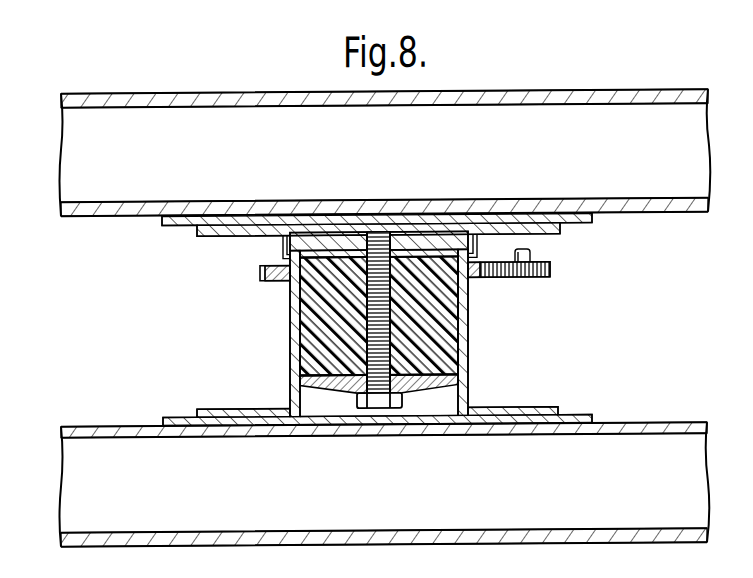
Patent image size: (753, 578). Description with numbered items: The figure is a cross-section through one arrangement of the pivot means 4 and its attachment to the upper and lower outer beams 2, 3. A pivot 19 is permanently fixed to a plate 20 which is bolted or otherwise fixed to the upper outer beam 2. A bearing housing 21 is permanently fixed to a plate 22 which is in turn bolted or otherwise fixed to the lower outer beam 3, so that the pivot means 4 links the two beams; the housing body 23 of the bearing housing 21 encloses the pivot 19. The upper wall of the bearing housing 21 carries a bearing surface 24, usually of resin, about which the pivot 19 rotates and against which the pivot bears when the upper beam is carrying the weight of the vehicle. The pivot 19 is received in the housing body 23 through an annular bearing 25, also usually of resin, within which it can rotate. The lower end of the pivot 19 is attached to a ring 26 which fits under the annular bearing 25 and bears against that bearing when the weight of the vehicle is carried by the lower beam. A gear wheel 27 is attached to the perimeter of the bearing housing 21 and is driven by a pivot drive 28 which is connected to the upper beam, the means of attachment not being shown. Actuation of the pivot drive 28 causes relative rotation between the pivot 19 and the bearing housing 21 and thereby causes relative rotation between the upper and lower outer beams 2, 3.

The upper outer beam 2 is at (125, 192).
The lower outer beam 3 is at (113, 467).
The pivot means 4 is at (229, 257).
The pivot 19 is at (395, 343).
The plate 20 is at (565, 217).
The bearing housing 21 is at (455, 383).
The plate 22 is at (590, 416).
The housing 23 is at (294, 298).
The bearing surface 24 is at (325, 240).
The annular bearing 25 is at (430, 308).
The ring 26 is at (325, 372).
The gear wheel 27 is at (258, 276).
The pivot drive 28 is at (548, 270).